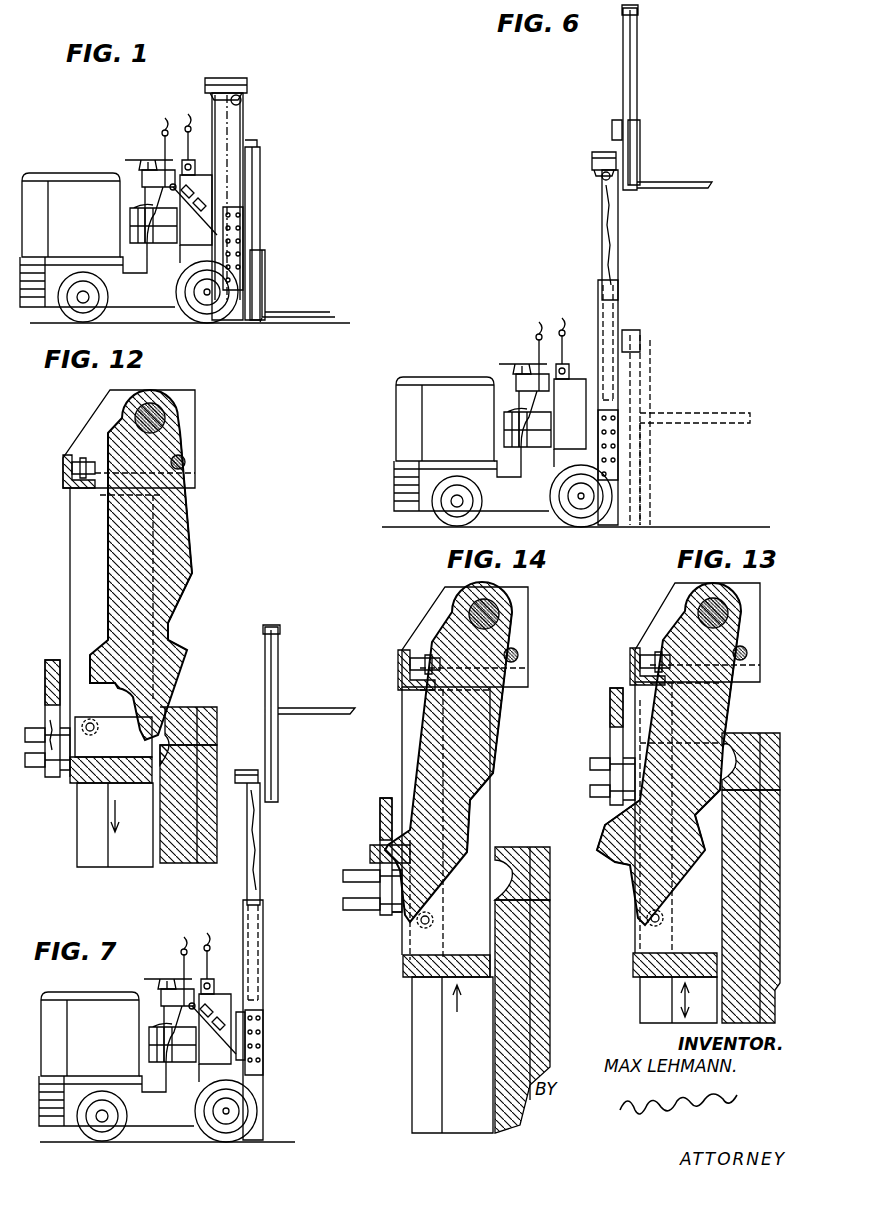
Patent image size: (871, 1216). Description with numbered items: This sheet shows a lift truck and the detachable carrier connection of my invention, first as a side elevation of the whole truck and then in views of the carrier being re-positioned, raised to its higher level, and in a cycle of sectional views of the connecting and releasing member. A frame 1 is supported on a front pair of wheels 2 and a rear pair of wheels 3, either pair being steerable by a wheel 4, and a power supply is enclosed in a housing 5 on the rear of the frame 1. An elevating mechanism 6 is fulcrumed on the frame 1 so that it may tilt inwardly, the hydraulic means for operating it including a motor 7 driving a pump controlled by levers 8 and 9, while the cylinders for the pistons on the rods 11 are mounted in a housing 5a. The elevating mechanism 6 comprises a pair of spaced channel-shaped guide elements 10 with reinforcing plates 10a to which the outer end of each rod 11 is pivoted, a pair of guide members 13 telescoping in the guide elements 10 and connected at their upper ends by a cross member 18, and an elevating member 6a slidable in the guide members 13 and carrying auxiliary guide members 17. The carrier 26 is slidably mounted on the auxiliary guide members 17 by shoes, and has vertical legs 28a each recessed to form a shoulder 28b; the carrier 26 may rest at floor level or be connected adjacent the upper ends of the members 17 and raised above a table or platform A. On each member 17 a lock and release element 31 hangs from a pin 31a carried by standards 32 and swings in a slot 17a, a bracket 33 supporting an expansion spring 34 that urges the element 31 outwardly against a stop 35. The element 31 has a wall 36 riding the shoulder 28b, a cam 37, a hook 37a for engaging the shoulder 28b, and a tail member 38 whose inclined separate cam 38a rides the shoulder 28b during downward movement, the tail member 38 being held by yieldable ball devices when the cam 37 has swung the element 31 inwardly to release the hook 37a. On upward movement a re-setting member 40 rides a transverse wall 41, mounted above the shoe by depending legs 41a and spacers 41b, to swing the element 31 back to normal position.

In FIG. 1, the frame 1 is at (100, 238).
In FIG. 6, the frame 1 is at (474, 442).
In FIG. 7, the frame 1 is at (119, 1057).
In FIG. 1, the front pair of wheels 2 is at (207, 302).
In FIG. 6, the front pair of wheels 2 is at (581, 505).
In FIG. 7, the front pair of wheels 2 is at (226, 1111).
In FIG. 1, the rear pair of wheels 3 is at (69, 305).
In FIG. 6, the rear pair of wheels 3 is at (452, 510).
In FIG. 7, the rear pair of wheels 3 is at (102, 1116).
In FIG. 1, the wheel 4 is at (146, 151).
In FIG. 6, the wheel 4 is at (520, 350).
In FIG. 7, the wheel 4 is at (168, 970).
In FIG. 1, the housing 5 is at (71, 206).
In FIG. 6, the housing 5 is at (432, 419).
In FIG. 7, the housing 5 is at (77, 1034).
In FIG. 1, the housing 5a is at (196, 210).
In FIG. 6, the housing 5a is at (570, 413).
In FIG. 7, the housing 5a is at (215, 1029).
In FIG. 1, the elevating mechanism 6 is at (283, 278).
In FIG. 7, the elevating mechanism 6 is at (283, 1058).
In FIG. 6, the elevating member 6a is at (614, 132).
In FIG. 1, the motor 7 is at (136, 223).
In FIG. 6, the motor 7 is at (510, 426).
In FIG. 7, the motor 7 is at (157, 1042).
In FIG. 1, the lever 8 is at (187, 137).
In FIG. 6, the lever 8 is at (562, 340).
In FIG. 7, the lever 8 is at (207, 957).
In FIG. 1, the lever 9 is at (160, 144).
In FIG. 6, the lever 9 is at (534, 347).
In FIG. 7, the lever 9 is at (179, 963).
In FIG. 1, the guide elements 10 is at (244, 188).
In FIG. 6, the guide elements 10 is at (618, 298).
In FIG. 7, the guide elements 10 is at (263, 998).
In FIG. 1, the reinforcing plates 10a is at (240, 250).
In FIG. 6, the reinforcing plates 10a is at (618, 454).
In FIG. 7, the reinforcing plates 10a is at (263, 1080).
In FIG. 1, the rod 11 is at (230, 209).
In FIG. 7, the rod 11 is at (212, 1029).
In FIG. 6, the guide members 13 is at (616, 225).
In FIG. 7, the guide members 13 is at (262, 845).
In FIG. 1, the auxiliary guide members 17 is at (260, 216).
In FIG. 6, the auxiliary guide members 17 is at (637, 68).
In FIG. 14, the auxiliary guide members 17 is at (412, 1036).
In FIG. 13, the auxiliary guide members 17 is at (640, 975).
In FIG. 14, the slot 17a is at (475, 977).
In FIG. 13, the slot 17a is at (636, 952).
In FIG. 1, the cross member 18 is at (232, 78).
In FIG. 6, the cross member 18 is at (596, 168).
In FIG. 1, the carrier 26 is at (294, 317).
In FIG. 6, the carrier 26 is at (672, 184).
In FIG. 7, the carrier 26 is at (303, 712).
In FIG. 12, the vertical legs 28a is at (168, 863).
In FIG. 14, the vertical legs 28a is at (550, 1007).
In FIG. 13, the vertical legs 28a is at (780, 985).
In FIG. 12, the shoulder 28b is at (190, 738).
In FIG. 14, the shoulder 28b is at (520, 892).
In FIG. 13, the shoulder 28b is at (745, 770).
In FIG. 12, the lock and release element 31 is at (108, 538).
In FIG. 14, the lock and release element 31 is at (432, 724).
In FIG. 13, the lock and release element 31 is at (735, 640).
In FIG. 12, the pin 31a is at (165, 418).
In FIG. 14, the pin 31a is at (500, 618).
In FIG. 13, the pin 31a is at (728, 614).
In FIG. 12, the standards 32 is at (196, 432).
In FIG. 14, the standards 32 is at (465, 637).
In FIG. 13, the standards 32 is at (760, 676).
In FIG. 12, the bracket 33 is at (68, 488).
In FIG. 14, the bracket 33 is at (416, 670).
In FIG. 13, the bracket 33 is at (632, 650).
In FIG. 12, the expansion spring 34 is at (88, 462).
In FIG. 14, the expansion spring 34 is at (425, 664).
In FIG. 13, the expansion spring 34 is at (650, 652).
In FIG. 12, the stop 35 is at (185, 462).
In FIG. 14, the stop 35 is at (518, 656).
In FIG. 12, the wall 36 is at (190, 548).
In FIG. 14, the wall 36 is at (490, 752).
In FIG. 13, the wall 36 is at (724, 712).
In FIG. 12, the cam 37 is at (180, 605).
In FIG. 14, the cam 37 is at (482, 795).
In FIG. 13, the cam 37 is at (696, 812).
In FIG. 12, the hook 37a is at (188, 648).
In FIG. 14, the hook 37a is at (478, 840).
In FIG. 13, the hook 37a is at (703, 852).
In FIG. 12, the tail member 38 is at (100, 725).
In FIG. 14, the tail member 38 is at (432, 914).
In FIG. 13, the tail member 38 is at (655, 918).
In FIG. 12, the separate cam 38a is at (172, 690).
In FIG. 12, the re-setting member 40 is at (90, 715).
In FIG. 14, the re-setting member 40 is at (370, 852).
In FIG. 13, the re-setting member 40 is at (606, 845).
In FIG. 12, the transverse wall 41 is at (46, 662).
In FIG. 14, the transverse wall 41 is at (380, 812).
In FIG. 13, the transverse wall 41 is at (610, 706).
In FIG. 12, the depending legs 41a is at (52, 780).
In FIG. 14, the depending legs 41a is at (392, 915).
In FIG. 14, the spacers 41b is at (343, 880).
In FIG. 6, the table or platform A is at (744, 413).